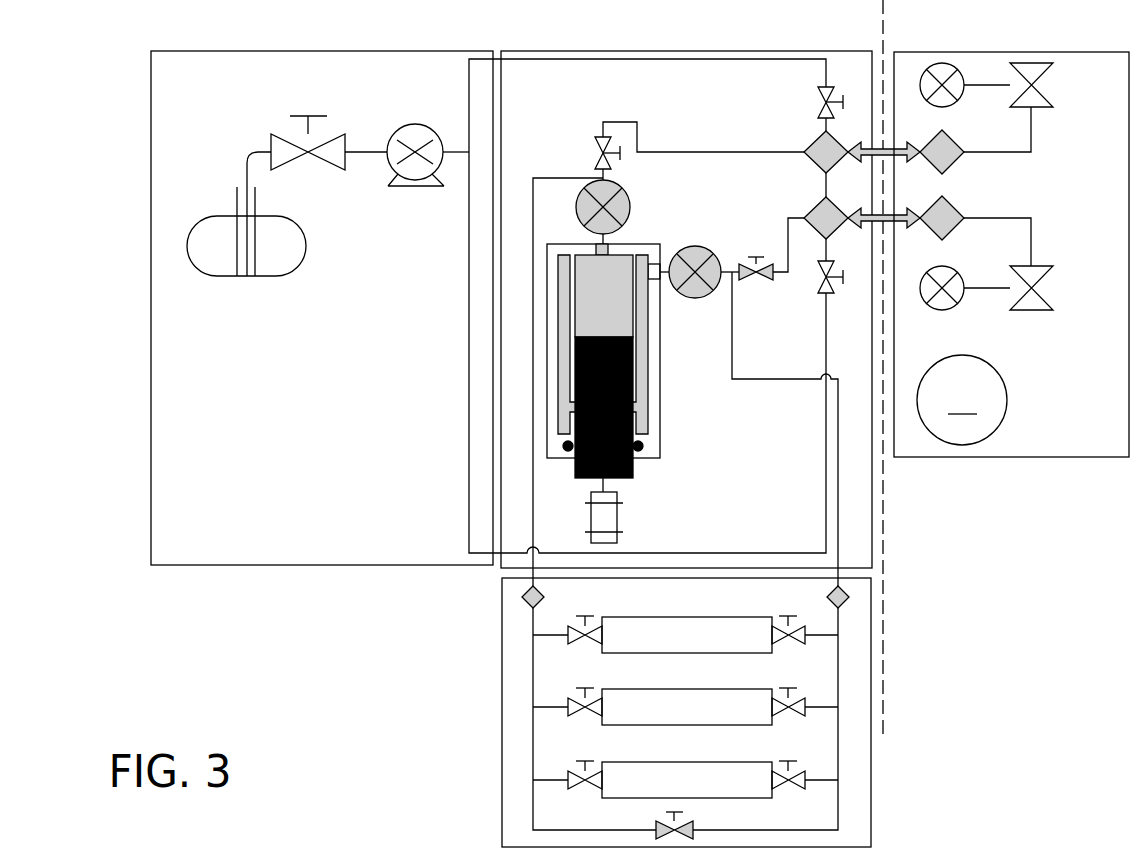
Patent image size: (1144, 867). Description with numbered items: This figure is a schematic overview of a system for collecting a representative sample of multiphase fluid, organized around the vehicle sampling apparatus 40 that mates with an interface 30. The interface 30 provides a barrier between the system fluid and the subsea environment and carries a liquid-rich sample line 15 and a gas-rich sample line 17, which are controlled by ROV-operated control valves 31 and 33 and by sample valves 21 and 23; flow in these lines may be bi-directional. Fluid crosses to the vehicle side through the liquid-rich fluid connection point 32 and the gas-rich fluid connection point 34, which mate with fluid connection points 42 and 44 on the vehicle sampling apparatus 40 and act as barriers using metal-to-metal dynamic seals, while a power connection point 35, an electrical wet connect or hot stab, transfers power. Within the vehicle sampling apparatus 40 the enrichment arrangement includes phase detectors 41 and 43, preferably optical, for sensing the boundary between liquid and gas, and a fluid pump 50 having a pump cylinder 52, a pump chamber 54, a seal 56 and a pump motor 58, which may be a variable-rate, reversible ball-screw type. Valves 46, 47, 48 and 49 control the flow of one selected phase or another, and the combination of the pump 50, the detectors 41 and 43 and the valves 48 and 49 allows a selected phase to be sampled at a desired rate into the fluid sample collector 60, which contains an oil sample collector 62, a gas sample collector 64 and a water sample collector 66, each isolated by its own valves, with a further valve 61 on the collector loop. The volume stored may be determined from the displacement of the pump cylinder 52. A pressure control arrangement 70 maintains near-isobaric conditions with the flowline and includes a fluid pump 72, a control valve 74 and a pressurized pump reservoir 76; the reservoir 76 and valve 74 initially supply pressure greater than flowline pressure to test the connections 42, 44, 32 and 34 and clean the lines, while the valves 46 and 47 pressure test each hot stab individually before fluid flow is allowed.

The liquid-rich sample line 15 is at (1032, 138).
The gas-rich sample line 17 is at (1032, 240).
The sample valve 21 is at (1053, 100).
The sample valve 23 is at (1043, 278).
The interface 30 is at (990, 458).
The ROV-operated control valve 31 is at (944, 63).
The liquid-rich fluid connection point 32 is at (962, 146).
The ROV-operated control valve 33 is at (942, 310).
The gas-rich fluid connection point 34 is at (962, 213).
The power connection point 35 is at (962, 400).
The vehicle sampling apparatus 40 is at (657, 50).
The phase detector 41 is at (632, 208).
The fluid connection point 42 is at (815, 142).
The phase detector 43 is at (698, 247).
The fluid connection point 44 is at (815, 208).
The valve 46 is at (822, 93).
The valve 47 is at (830, 297).
The valve 48 is at (753, 282).
The valve 49 is at (598, 145).
The fluid pump 50 is at (651, 376).
The pump cylinder 52 is at (632, 472).
The pump chamber 54 is at (638, 312).
The seal 56 is at (568, 452).
The pump motor 58 is at (617, 518).
The fluid sample collector 60 is at (500, 713).
The valve 61 is at (657, 825).
The oil sample collector 62 is at (685, 616).
The gas sample collector 64 is at (685, 689).
The water sample collector 66 is at (685, 762).
The pressure control arrangement 70 is at (148, 258).
The fluid pump 72 is at (410, 122).
The control valve 74 is at (290, 163).
The pressurized pump reservoir 76 is at (272, 277).